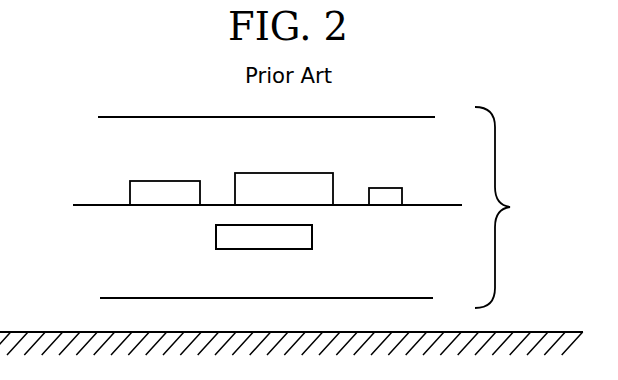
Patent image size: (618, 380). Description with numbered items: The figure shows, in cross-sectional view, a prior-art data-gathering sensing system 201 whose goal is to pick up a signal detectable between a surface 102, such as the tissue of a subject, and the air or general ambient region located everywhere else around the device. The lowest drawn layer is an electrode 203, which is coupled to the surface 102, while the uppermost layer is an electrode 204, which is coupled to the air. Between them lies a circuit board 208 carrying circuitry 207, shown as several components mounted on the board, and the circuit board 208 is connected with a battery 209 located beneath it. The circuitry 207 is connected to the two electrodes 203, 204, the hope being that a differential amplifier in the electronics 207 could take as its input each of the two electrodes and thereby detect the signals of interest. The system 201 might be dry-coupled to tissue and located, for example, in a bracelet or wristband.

The surface 102 is at (487, 332).
The system 201 is at (510, 207).
The electrode 203 is at (130, 298).
The electrode 204 is at (363, 117).
The circuitry 207 is at (387, 188).
The circuit board 208 is at (101, 205).
The battery 209 is at (216, 241).